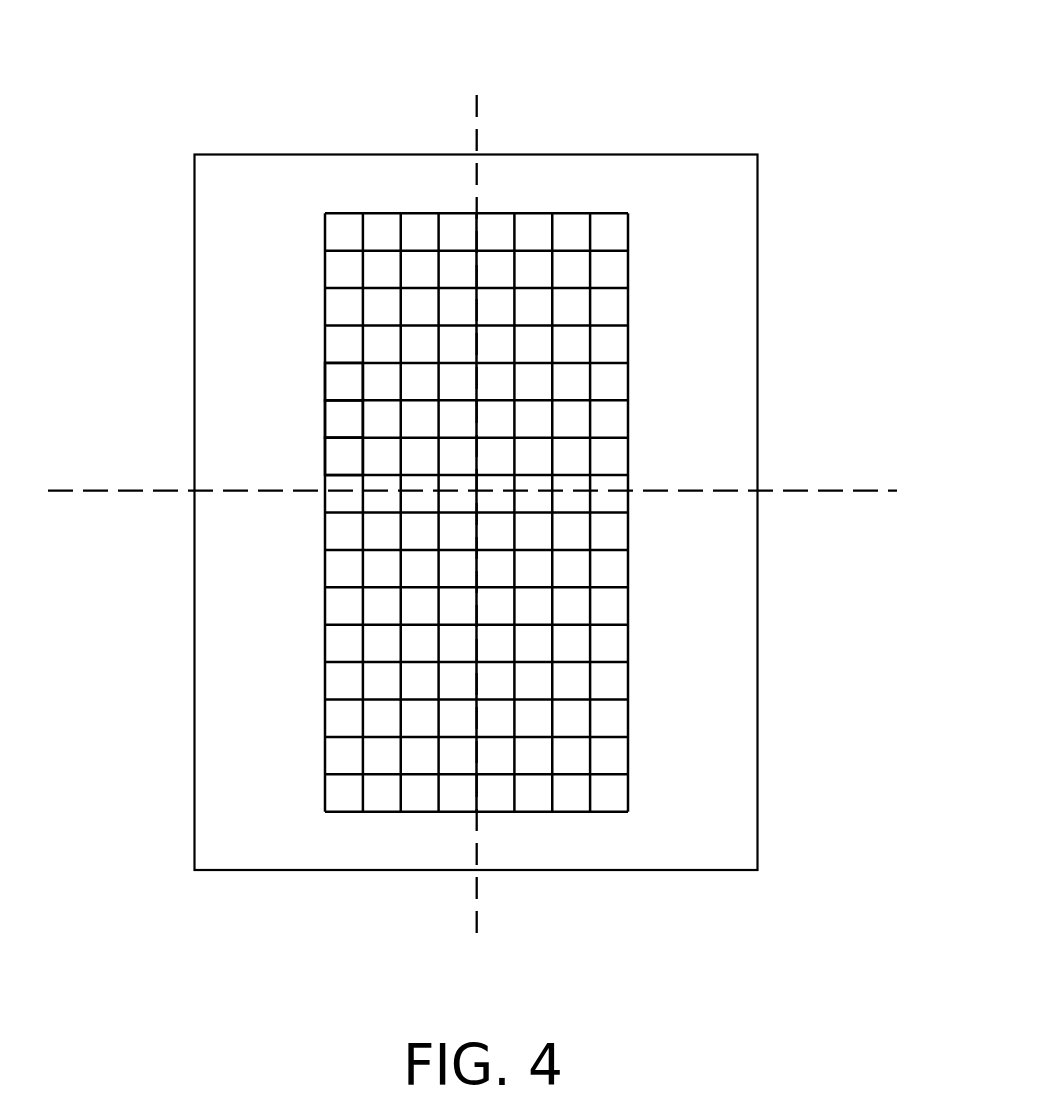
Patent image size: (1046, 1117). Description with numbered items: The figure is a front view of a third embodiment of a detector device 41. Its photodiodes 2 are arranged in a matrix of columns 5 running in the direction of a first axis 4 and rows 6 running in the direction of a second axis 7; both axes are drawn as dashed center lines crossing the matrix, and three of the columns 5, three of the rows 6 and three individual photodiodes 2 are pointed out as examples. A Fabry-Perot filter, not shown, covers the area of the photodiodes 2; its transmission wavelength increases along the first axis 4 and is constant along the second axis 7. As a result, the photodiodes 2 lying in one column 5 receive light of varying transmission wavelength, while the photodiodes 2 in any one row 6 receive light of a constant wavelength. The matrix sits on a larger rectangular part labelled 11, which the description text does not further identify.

The detector device 41 is at (695, 116).
The substrate 11 is at (737, 197).
The first axis 4 is at (477, 107).
The second axis 7 is at (836, 490).
The columns 5 is at (343, 192).
The rows 6 is at (313, 232).
The photodiodes 2 is at (337, 381).